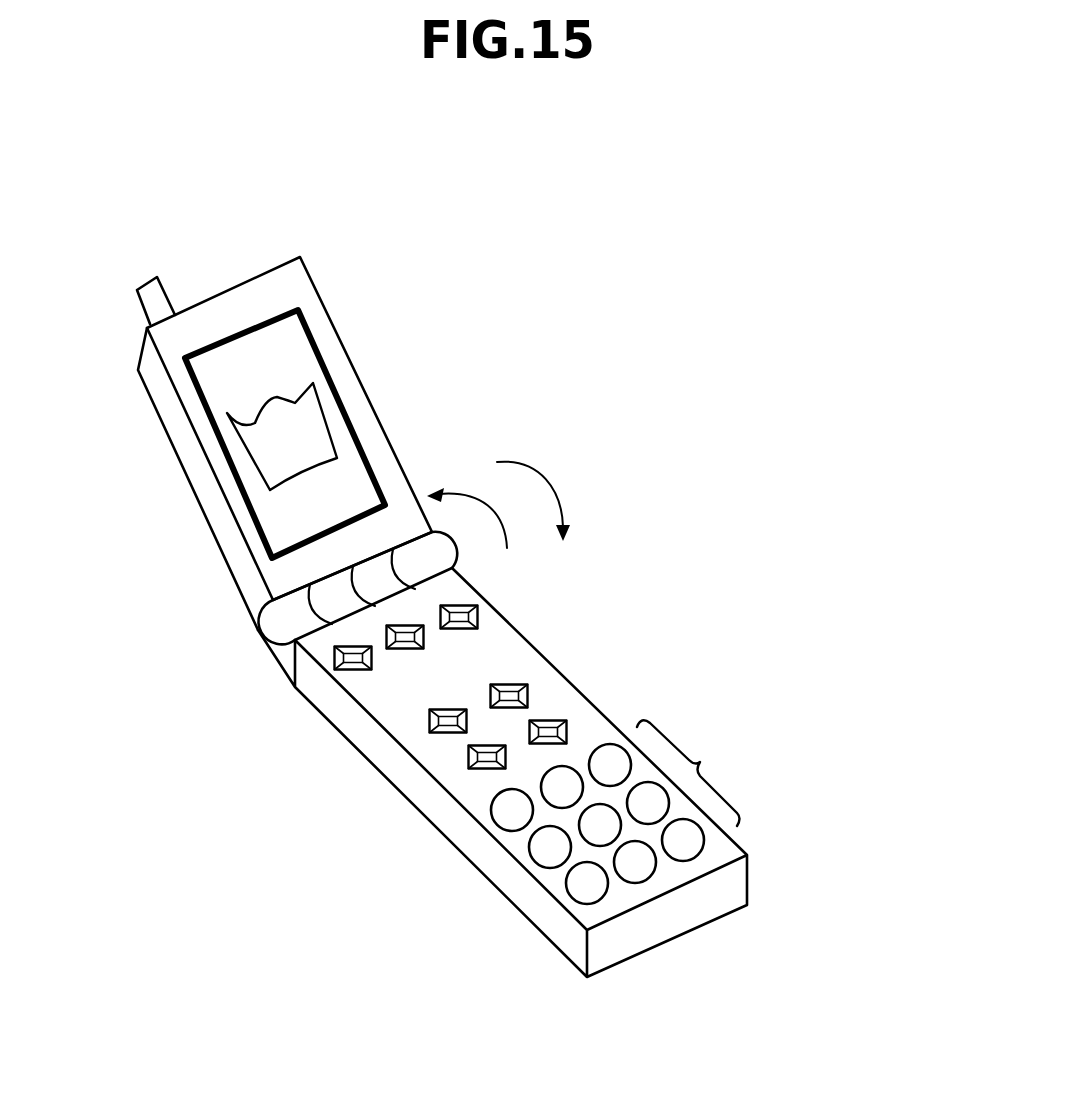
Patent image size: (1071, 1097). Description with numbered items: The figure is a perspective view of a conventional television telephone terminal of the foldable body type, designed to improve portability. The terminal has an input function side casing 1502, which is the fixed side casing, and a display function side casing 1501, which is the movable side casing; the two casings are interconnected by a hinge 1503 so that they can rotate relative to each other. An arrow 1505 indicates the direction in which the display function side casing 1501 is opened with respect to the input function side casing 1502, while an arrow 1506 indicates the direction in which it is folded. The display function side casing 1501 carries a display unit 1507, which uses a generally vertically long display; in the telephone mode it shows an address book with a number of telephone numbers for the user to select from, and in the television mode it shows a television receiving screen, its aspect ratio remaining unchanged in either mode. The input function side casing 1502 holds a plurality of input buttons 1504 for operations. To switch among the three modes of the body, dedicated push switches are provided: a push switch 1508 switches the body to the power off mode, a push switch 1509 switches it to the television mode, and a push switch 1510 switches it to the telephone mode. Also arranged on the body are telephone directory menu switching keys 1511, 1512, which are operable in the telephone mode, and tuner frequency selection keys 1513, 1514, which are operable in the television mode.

The display function side casing 1501 is at (295, 292).
The input function side casing 1502 is at (717, 857).
The hinge 1503 is at (273, 622).
The input buttons 1504 is at (700, 763).
The arrow 1505 is at (458, 498).
The arrow 1506 is at (570, 501).
The display unit 1507 is at (322, 378).
The push switch 1508 is at (333, 658).
The push switch 1509 is at (478, 617).
The push switch 1510 is at (386, 634).
The telephone directory menu switching key 1511 is at (430, 723).
The telephone directory menu switching key 1512 is at (528, 695).
The tuner frequency selection key 1513 is at (468, 760).
The tuner frequency selection key 1514 is at (567, 733).